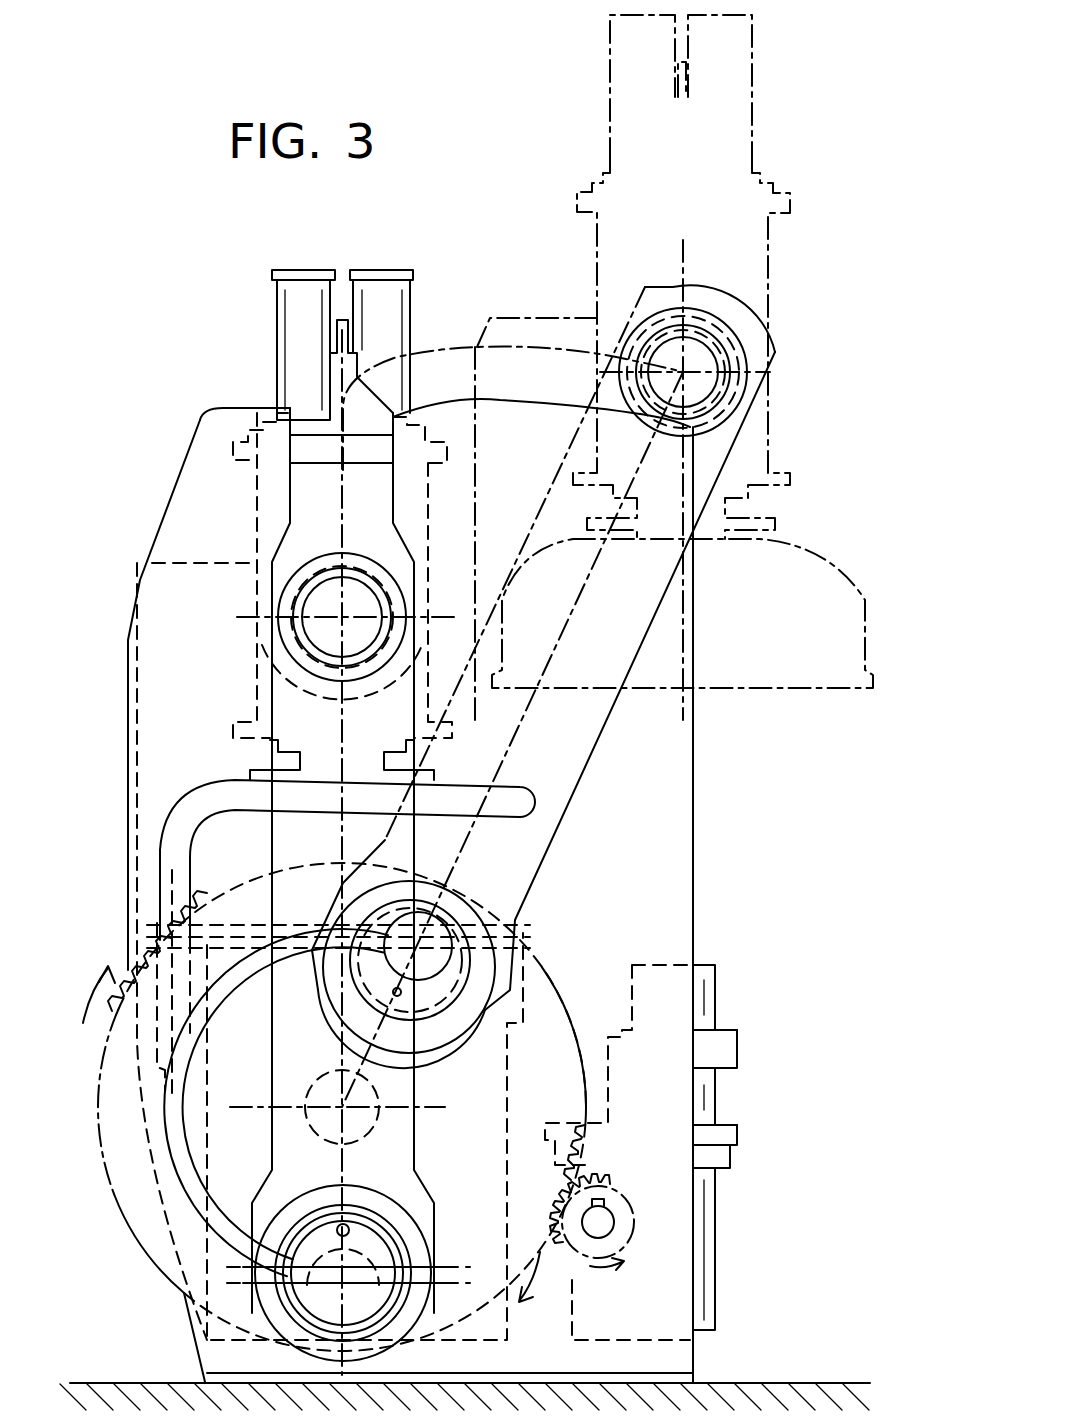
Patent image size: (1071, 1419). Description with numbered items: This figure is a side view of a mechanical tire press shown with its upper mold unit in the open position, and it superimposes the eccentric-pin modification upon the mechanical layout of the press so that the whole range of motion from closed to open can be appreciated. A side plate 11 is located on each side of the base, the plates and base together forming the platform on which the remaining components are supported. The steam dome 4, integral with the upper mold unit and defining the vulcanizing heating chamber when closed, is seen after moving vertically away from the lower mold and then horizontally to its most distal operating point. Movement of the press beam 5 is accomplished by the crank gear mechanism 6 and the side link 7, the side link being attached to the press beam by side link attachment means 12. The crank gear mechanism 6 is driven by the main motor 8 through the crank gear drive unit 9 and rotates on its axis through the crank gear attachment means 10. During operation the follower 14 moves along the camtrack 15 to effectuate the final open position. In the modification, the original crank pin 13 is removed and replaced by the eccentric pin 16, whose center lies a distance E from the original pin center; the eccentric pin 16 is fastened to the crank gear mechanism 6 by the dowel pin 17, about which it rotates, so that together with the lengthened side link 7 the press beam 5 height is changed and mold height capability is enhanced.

The steam dome 4 is at (815, 555).
The press beam 5 is at (790, 197).
The crank gear mechanism 6 is at (585, 1150).
The side link 7 is at (775, 352).
The main motor 8 is at (715, 1000).
The crank gear drive unit 9 is at (605, 1180).
The crank gear attachment means 10 is at (345, 1107).
The side plate 11 is at (200, 455).
The side link attachment means 12 is at (342, 617).
The crank pin 13 is at (457, 1207).
The follower 14 is at (322, 570).
The camtrack 15 is at (297, 417).
The eccentric pin 16 is at (460, 1000).
The dowel pin 17 is at (397, 992).